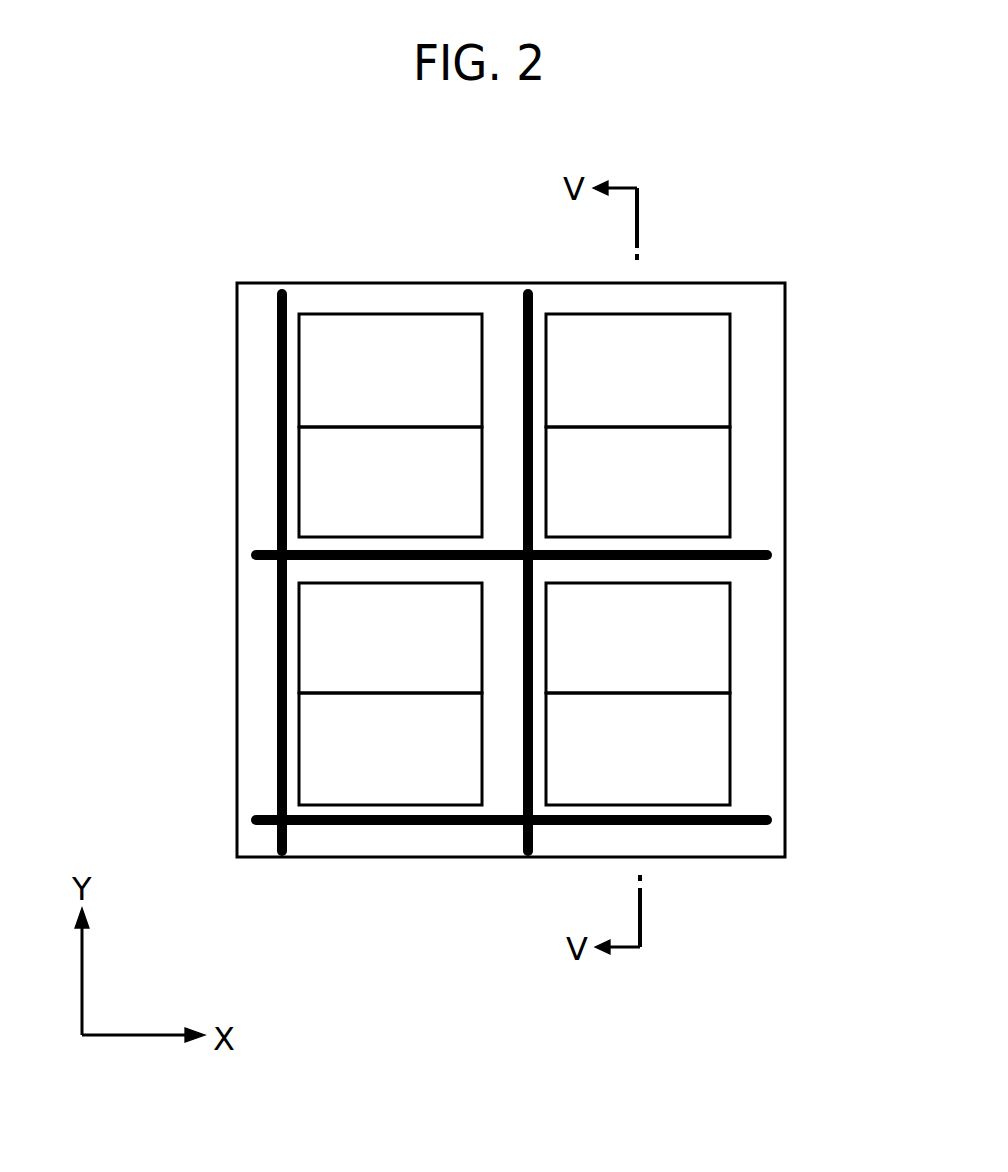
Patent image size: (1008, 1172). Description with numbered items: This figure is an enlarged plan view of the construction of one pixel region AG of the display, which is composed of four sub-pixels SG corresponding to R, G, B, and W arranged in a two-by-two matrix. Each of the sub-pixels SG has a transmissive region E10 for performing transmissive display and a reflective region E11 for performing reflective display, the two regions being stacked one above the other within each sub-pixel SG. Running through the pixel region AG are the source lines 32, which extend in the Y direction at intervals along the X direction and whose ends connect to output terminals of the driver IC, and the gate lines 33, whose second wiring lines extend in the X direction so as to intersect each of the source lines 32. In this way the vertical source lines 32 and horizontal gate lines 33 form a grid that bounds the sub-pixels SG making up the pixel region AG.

The pixel region AG is at (773, 264).
The sub-pixel SG is at (520, 563).
The source line 32 is at (276, 306).
The gate line 33 is at (755, 548).
The transmissive region E10 is at (514, 503).
The reflective region E11 is at (514, 616).